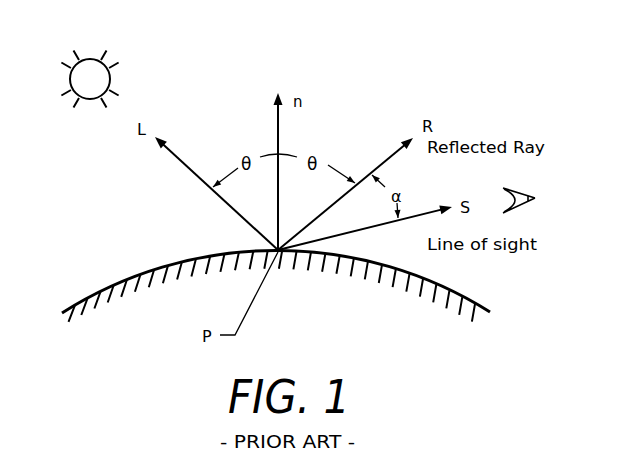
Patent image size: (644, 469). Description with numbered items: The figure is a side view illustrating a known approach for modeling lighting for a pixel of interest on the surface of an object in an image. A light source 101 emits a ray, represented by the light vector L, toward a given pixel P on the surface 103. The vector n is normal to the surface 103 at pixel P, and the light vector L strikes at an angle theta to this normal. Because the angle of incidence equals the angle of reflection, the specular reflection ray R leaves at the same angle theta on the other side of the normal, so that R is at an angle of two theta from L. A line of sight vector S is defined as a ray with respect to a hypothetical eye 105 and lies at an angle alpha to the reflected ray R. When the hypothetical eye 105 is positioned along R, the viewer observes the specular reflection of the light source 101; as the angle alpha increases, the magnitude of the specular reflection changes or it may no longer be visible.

The light source 101 is at (88, 58).
The surface 103 is at (122, 282).
The hypothetical eye 105 is at (525, 192).